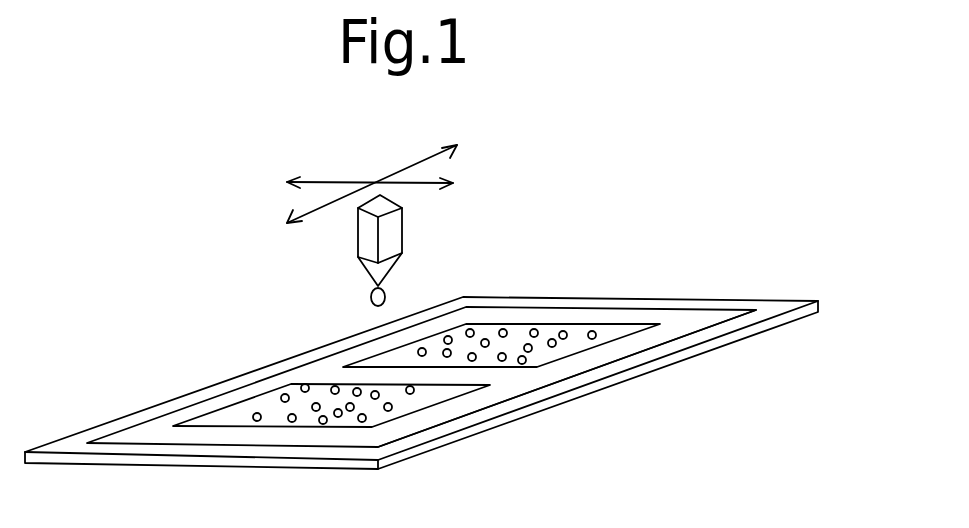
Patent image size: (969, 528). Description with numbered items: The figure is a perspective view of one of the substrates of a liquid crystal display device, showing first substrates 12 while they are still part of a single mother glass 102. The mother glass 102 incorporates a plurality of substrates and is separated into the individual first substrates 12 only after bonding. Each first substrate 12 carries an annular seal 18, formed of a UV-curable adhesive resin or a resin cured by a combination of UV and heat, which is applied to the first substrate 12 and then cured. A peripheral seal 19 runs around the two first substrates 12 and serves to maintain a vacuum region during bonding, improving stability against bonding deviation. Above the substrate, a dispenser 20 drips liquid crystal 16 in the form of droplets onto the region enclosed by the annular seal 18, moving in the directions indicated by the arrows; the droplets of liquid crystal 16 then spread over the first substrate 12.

The mother glass 102 is at (633, 300).
The first substrate 12 is at (153, 430).
The liquid crystal 16 is at (275, 397).
The annular seal 18 is at (443, 403).
The peripheral seal 19 is at (573, 378).
The dispenser 20 is at (402, 230).